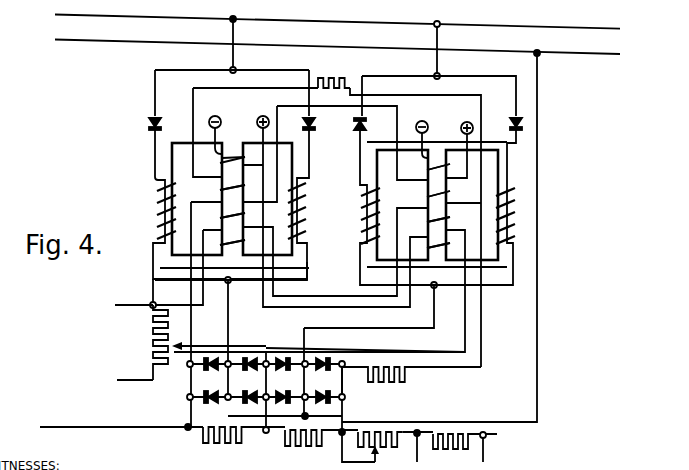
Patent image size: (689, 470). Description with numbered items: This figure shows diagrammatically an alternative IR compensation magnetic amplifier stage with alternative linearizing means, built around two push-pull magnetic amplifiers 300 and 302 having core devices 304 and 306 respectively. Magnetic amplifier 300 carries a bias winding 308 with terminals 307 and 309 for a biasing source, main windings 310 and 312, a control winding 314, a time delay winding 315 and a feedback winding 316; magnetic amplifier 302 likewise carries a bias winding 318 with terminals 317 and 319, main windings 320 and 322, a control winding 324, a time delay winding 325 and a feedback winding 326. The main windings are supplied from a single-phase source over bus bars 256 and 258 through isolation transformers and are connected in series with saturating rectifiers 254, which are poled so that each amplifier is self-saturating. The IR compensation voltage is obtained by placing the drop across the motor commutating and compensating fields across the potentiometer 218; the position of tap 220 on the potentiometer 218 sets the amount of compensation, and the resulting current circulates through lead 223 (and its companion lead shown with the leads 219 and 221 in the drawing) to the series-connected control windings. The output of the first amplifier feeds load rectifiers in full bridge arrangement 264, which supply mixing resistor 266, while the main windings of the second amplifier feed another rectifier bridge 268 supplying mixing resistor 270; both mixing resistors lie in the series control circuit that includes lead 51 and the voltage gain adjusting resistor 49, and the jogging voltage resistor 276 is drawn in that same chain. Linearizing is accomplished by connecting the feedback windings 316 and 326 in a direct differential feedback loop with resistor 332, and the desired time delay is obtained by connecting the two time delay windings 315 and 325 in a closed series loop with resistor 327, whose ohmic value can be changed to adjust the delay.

The bus bar 256 is at (337, 21).
The bus bar 258 is at (337, 47).
The saturating rectifier 254 is at (150, 122).
The resistor 327 is at (335, 74).
The terminal 307 is at (222, 112).
The terminal 309 is at (270, 113).
The bias winding 308 is at (235, 158).
The terminal 317 is at (432, 111).
The terminal 319 is at (462, 121).
The magnetic amplifier 300 is at (146, 178).
The magnetic amplifier 302 is at (579, 188).
The main winding 310 is at (158, 209).
The main winding 312 is at (297, 209).
The main winding 320 is at (363, 230).
The main winding 322 is at (520, 224).
The time delay winding 315 is at (221, 191).
The feedback winding 316 is at (246, 215).
The control winding 314 is at (245, 240).
The bias winding 318 is at (429, 170).
The time delay winding 325 is at (426, 196).
The feedback winding 326 is at (451, 218).
The control winding 324 is at (446, 246).
The core device 304 is at (231, 260).
The core device 306 is at (436, 262).
The terminal lead 219 is at (140, 302).
The potentiometer 218 is at (153, 347).
The tap 220 is at (179, 344).
The terminal lead 221 is at (133, 385).
The lead 223 is at (357, 355).
The lead 51 is at (153, 427).
The load rectifiers 264 is at (245, 390).
The rectifiers 268 is at (318, 390).
The resistor 332 is at (381, 382).
The mixing resistor 266 is at (246, 449).
The mixing resistor 270 is at (306, 449).
The voltage gain adjusting resistor 49 is at (382, 451).
The resistor 276 is at (453, 452).